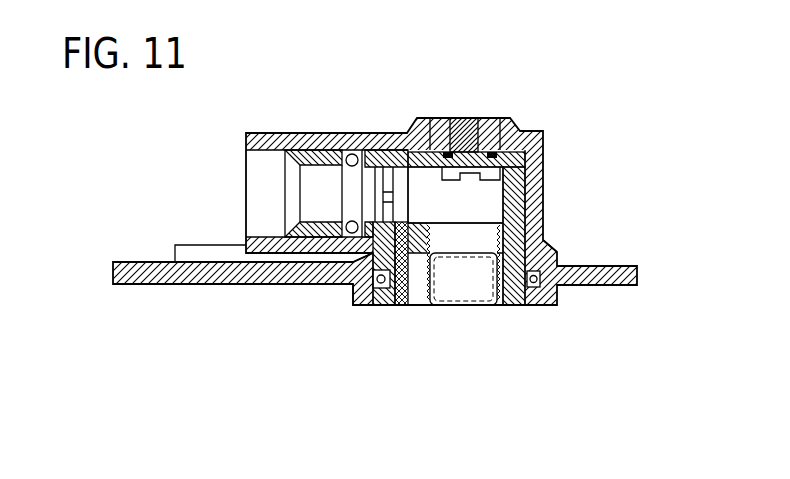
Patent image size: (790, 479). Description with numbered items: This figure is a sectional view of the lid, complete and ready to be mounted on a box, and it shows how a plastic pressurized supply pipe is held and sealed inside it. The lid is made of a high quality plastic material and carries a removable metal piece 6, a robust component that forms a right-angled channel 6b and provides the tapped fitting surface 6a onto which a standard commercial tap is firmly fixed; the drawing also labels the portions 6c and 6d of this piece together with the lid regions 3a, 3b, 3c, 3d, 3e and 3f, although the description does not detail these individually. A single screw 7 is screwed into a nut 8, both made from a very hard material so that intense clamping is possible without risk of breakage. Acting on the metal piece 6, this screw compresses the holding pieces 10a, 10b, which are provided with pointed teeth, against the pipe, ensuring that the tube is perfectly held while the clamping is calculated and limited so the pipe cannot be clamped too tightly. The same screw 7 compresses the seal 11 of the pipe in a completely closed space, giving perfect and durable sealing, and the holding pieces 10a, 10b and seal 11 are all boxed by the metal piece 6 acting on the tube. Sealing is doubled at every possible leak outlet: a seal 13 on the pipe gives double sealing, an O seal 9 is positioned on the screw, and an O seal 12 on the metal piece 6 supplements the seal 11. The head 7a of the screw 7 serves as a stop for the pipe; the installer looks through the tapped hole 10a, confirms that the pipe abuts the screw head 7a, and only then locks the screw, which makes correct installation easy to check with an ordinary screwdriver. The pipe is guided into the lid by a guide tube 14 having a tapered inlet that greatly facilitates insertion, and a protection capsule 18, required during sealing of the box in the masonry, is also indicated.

The mounting flange of housing 3a is at (557, 304).
The side wall of housing 3b is at (545, 233).
The socket portion of housing 3c is at (283, 238).
The boss of housing 3d is at (528, 128).
The chamfered corner of housing 3e is at (640, 268).
The shoulder of housing 3f is at (545, 148).
The removable metal piece 6 is at (528, 305).
The tapped fitting surface 6a is at (485, 308).
The right-angled channel 6b is at (452, 221).
The side wall of valve body 6c is at (368, 305).
The right wall of valve body 6d is at (543, 213).
The screw 7 is at (480, 118).
The screw head 7a is at (545, 177).
The nut 8 is at (515, 120).
The O seal 9 is at (446, 118).
The holding piece 10a is at (357, 293).
The holding piece 10b is at (398, 150).
The seal 11 is at (403, 306).
The O seal 12 is at (343, 297).
The seal 13 is at (352, 152).
The guide tube 14 is at (311, 150).
The protection capsule 18 is at (447, 258).